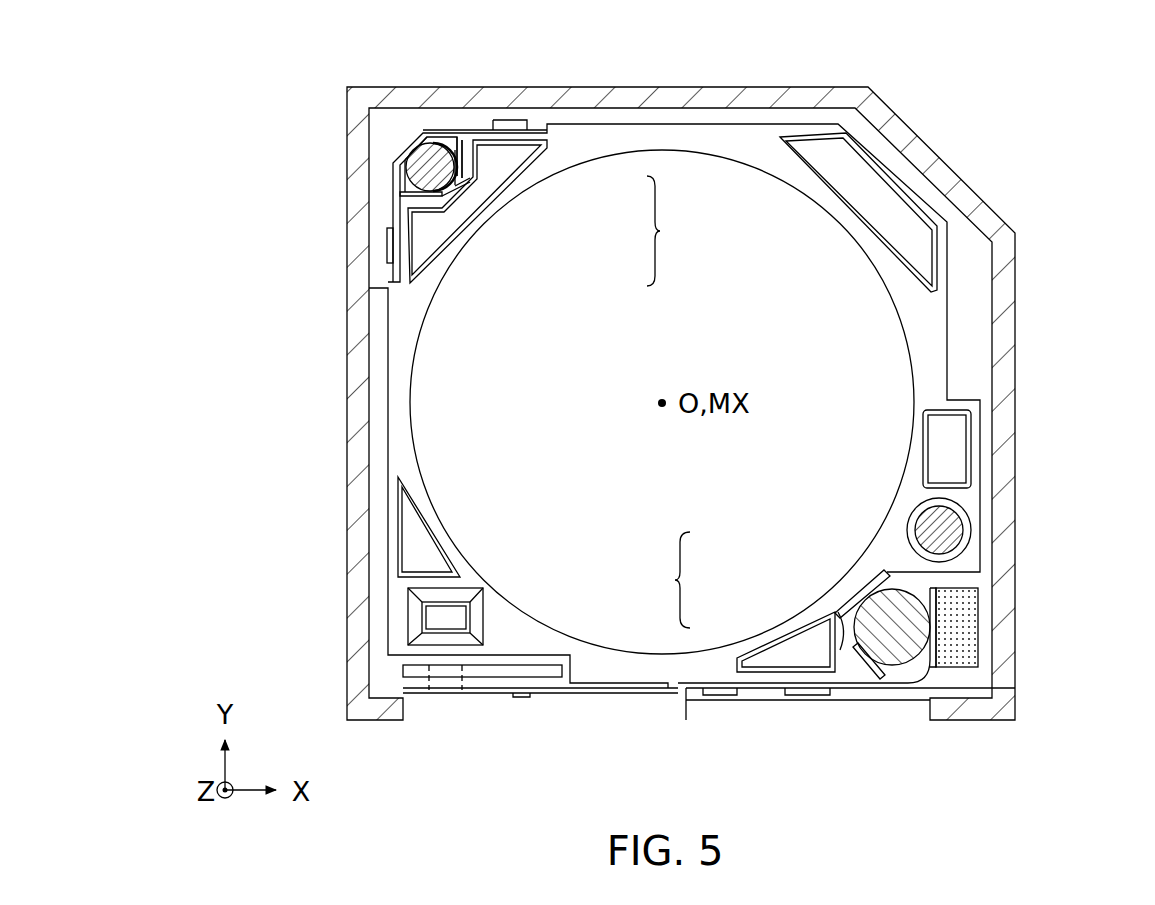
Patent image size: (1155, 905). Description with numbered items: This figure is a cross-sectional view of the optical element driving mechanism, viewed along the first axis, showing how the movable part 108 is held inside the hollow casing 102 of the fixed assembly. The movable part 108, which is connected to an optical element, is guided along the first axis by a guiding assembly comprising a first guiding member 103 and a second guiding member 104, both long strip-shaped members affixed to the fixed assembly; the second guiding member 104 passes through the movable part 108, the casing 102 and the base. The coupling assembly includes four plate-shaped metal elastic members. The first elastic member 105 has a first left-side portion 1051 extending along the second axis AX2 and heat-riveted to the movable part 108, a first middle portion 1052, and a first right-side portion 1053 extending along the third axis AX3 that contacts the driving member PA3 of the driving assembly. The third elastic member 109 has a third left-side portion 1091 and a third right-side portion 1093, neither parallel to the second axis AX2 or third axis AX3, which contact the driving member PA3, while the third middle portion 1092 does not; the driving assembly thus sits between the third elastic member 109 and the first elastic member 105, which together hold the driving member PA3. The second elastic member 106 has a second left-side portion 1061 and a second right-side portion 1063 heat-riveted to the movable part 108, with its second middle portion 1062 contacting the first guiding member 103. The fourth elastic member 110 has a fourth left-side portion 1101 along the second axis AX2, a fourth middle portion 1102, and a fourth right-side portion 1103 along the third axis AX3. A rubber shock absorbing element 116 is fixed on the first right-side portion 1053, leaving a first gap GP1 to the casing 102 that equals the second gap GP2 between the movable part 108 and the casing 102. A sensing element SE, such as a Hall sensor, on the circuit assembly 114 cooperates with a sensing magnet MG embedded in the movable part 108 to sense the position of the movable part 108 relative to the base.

The casing 102 is at (1003, 349).
The first guiding member 103 is at (428, 160).
The second guiding member 104 is at (950, 530).
The first elastic member 105 is at (924, 692).
The first left-side portion 1051 is at (888, 685).
The first middle portion 1052 is at (930, 677).
The first right-side portion 1053 is at (935, 591).
The second elastic member 106 is at (442, 118).
The second left-side portion 1061 is at (482, 132).
The second middle portion 1062 is at (407, 152).
The second right-side portion 1063 is at (391, 214).
The movable part 108 is at (891, 178).
The third elastic member 109 is at (654, 580).
The third left-side portion 1091 is at (873, 584).
The third middle portion 1092 is at (833, 615).
The third right-side portion 1093 is at (833, 632).
The fourth elastic member 110 is at (679, 231).
The fourth left-side portion 1101 is at (461, 188).
The fourth middle portion 1102 is at (462, 193).
The fourth right-side portion 1103 is at (460, 162).
The circuit assembly 114 is at (620, 690).
The shock absorbing element 116 is at (963, 603).
The first gap GP1 is at (940, 628).
The second gap GP2 is at (942, 449).
The sensing magnet MG is at (437, 617).
The sensing element SE is at (447, 680).
The driving member PA3 is at (866, 651).
The second axis AX2 is at (270, 470).
The third axis AX3 is at (160, 462).